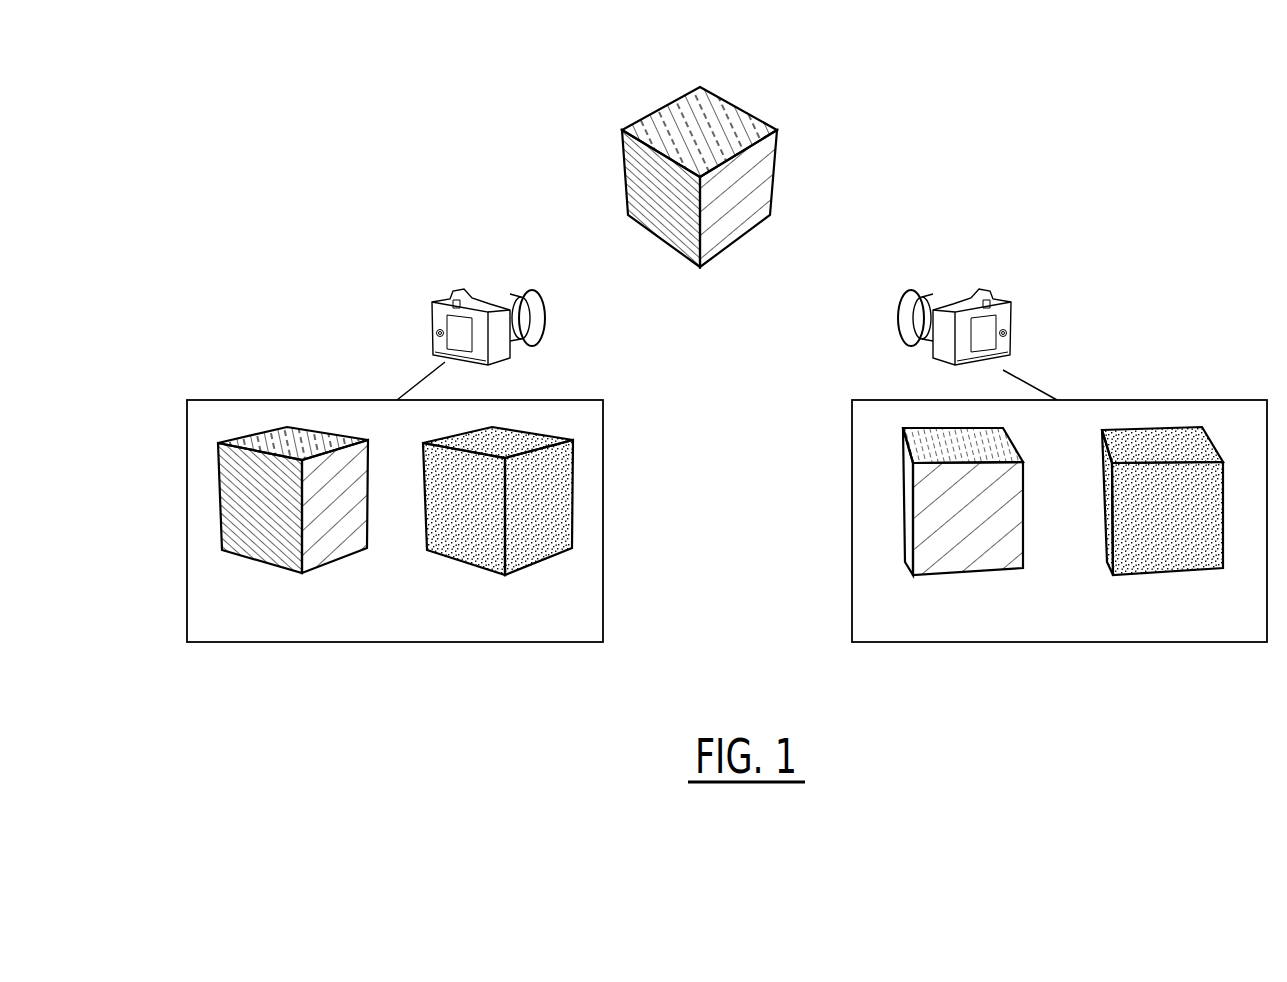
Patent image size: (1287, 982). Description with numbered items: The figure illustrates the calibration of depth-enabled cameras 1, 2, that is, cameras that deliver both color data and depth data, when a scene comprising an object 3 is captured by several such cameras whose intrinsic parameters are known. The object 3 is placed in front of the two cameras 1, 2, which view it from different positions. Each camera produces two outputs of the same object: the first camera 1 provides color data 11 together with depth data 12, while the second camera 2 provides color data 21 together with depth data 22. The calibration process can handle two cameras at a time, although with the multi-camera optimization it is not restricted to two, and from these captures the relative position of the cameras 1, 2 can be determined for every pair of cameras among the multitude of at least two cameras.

The depth-enabled camera 1 is at (467, 287).
The depth-enabled camera 2 is at (997, 287).
The object 3 is at (720, 93).
The color data 11 is at (255, 563).
The depth data 12 is at (463, 563).
The color data 21 is at (968, 577).
The depth data 22 is at (1175, 577).